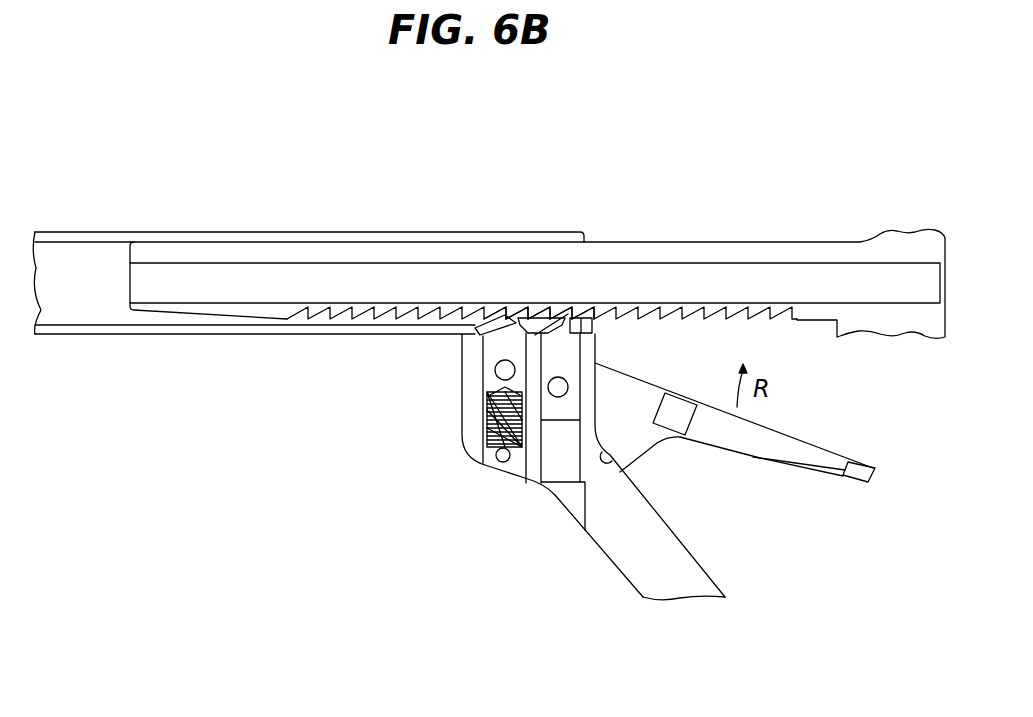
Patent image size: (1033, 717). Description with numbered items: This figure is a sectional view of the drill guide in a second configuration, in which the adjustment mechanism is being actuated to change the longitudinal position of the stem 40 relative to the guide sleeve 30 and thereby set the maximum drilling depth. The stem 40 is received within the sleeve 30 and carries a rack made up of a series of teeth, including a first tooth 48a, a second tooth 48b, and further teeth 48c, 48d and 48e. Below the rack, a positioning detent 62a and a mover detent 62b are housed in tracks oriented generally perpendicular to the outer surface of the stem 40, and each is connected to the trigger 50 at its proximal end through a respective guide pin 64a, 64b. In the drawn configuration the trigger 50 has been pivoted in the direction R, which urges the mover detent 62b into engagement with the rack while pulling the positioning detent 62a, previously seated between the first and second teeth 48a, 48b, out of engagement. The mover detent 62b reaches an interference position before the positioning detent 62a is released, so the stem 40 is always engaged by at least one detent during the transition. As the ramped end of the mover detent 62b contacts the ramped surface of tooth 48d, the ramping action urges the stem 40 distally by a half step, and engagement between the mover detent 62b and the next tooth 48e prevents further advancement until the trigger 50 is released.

The guide sleeve 30 is at (97, 237).
The stem 40 is at (793, 250).
The first tooth 48a is at (503, 313).
The second tooth 48b is at (526, 313).
The tooth 48c is at (550, 304).
The tooth 48d is at (572, 304).
The next tooth 48e is at (592, 304).
The positioning detent 62a is at (490, 343).
The mover detent 62b is at (552, 410).
The guide pin 64a is at (496, 372).
The guide pin 64b is at (566, 380).
The trigger 50 is at (787, 447).